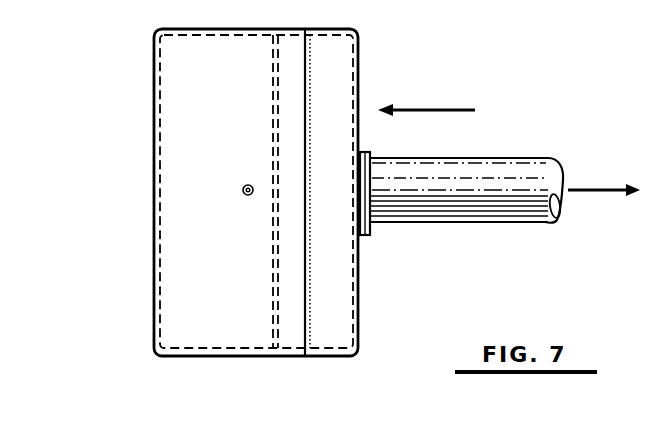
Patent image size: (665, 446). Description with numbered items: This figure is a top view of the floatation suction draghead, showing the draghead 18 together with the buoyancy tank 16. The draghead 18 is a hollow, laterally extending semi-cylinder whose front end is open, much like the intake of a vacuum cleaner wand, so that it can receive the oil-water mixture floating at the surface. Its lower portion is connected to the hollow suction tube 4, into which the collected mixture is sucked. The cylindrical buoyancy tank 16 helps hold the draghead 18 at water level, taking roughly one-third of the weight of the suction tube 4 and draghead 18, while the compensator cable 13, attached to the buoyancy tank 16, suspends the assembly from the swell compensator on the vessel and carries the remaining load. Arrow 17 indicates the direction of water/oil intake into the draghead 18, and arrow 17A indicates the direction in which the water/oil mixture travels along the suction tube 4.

The suction tube 4 is at (517, 153).
The compensator cable 13 is at (248, 185).
The buoyancy tank 16 is at (176, 84).
The arrow 17 is at (447, 110).
The arrow 17A is at (607, 190).
The draghead 18 is at (364, 82).